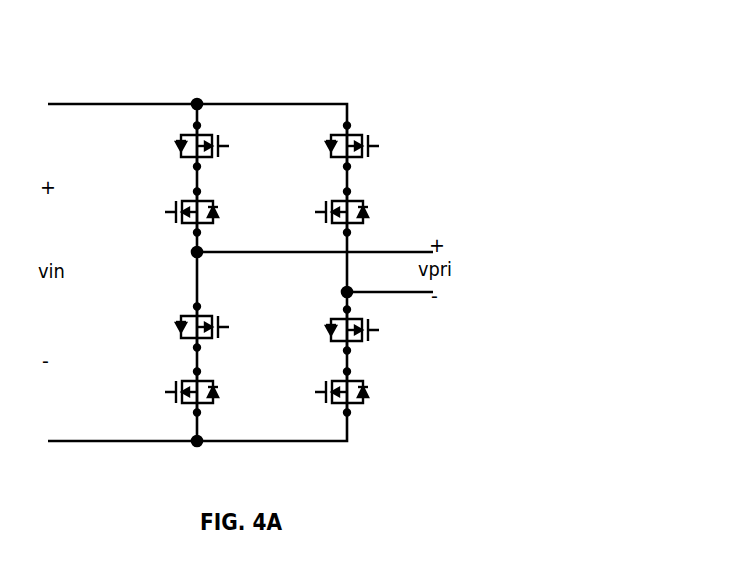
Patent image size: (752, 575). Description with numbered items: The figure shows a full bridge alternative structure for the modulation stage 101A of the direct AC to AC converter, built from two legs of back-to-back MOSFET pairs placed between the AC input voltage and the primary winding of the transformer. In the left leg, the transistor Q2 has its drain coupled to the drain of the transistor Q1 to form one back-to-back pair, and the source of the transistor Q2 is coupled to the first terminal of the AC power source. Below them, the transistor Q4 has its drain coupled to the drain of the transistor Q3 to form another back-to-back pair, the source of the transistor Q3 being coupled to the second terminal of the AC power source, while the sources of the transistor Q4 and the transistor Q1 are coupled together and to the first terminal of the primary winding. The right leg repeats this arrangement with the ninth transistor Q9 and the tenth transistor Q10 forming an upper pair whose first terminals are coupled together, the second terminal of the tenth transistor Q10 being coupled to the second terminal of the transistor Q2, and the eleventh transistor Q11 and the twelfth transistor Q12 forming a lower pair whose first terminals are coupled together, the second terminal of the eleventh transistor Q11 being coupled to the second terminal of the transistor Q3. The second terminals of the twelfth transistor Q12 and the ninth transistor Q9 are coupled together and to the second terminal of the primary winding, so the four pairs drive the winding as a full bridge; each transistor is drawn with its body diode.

The modulation stage 101A is at (428, 38).
The transistor Q1 is at (208, 212).
The transistor Q2 is at (184, 146).
The transistor Q3 is at (209, 392).
The transistor Q4 is at (185, 327).
The ninth transistor Q9 is at (361, 212).
The tenth transistor Q10 is at (328, 146).
The eleventh transistor Q11 is at (361, 392).
The twelfth transistor Q12 is at (328, 330).